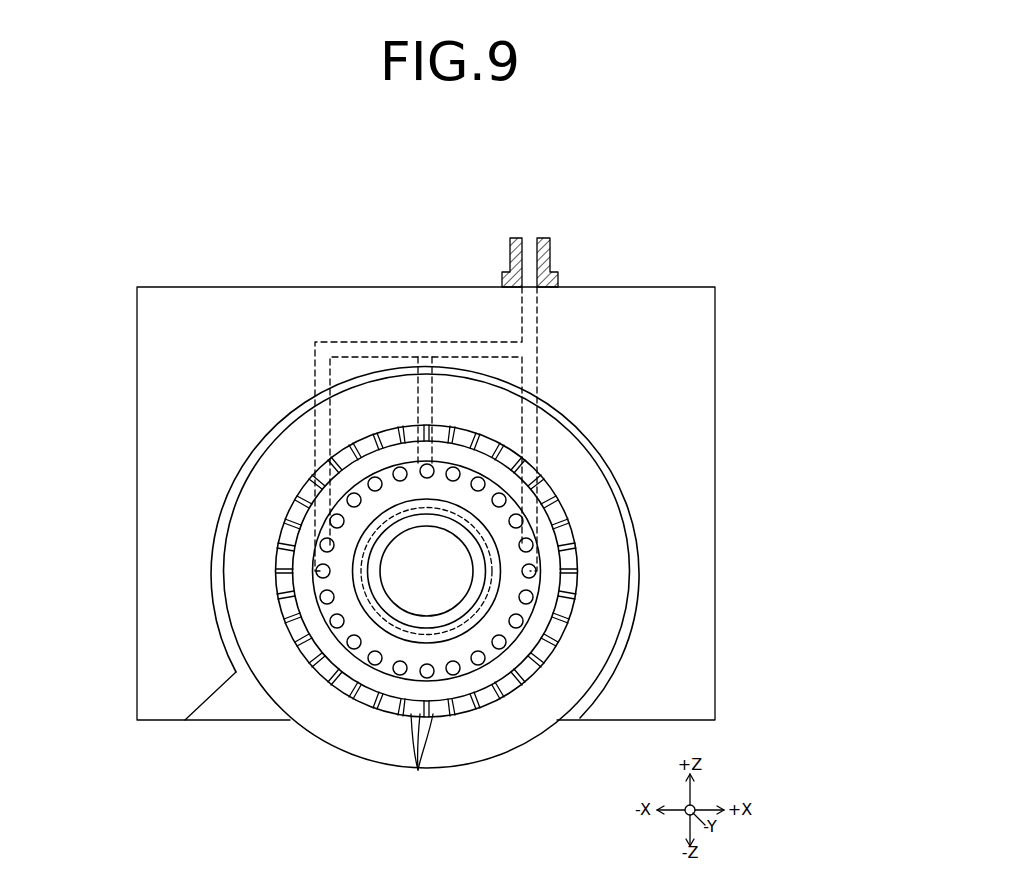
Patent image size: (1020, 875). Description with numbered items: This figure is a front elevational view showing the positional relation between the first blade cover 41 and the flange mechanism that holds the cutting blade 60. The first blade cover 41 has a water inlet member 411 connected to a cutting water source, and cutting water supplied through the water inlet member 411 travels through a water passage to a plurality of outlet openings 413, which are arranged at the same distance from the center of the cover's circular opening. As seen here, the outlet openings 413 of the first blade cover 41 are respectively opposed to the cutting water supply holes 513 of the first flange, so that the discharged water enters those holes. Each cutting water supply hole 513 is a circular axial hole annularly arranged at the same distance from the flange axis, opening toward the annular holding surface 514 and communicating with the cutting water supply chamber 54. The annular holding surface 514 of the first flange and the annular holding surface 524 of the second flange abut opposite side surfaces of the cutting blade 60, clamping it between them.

The first blade cover 41 is at (742, 320).
The water inlet member 411 is at (554, 262).
The outlet opening 413 is at (430, 467).
The cutting water supply hole 513 is at (370, 653).
The annular holding surface 514 is at (428, 759).
The annular holding surface 524 is at (428, 759).
The cutting water supply chamber 54 is at (513, 652).
The cutting blade 60 is at (369, 742).